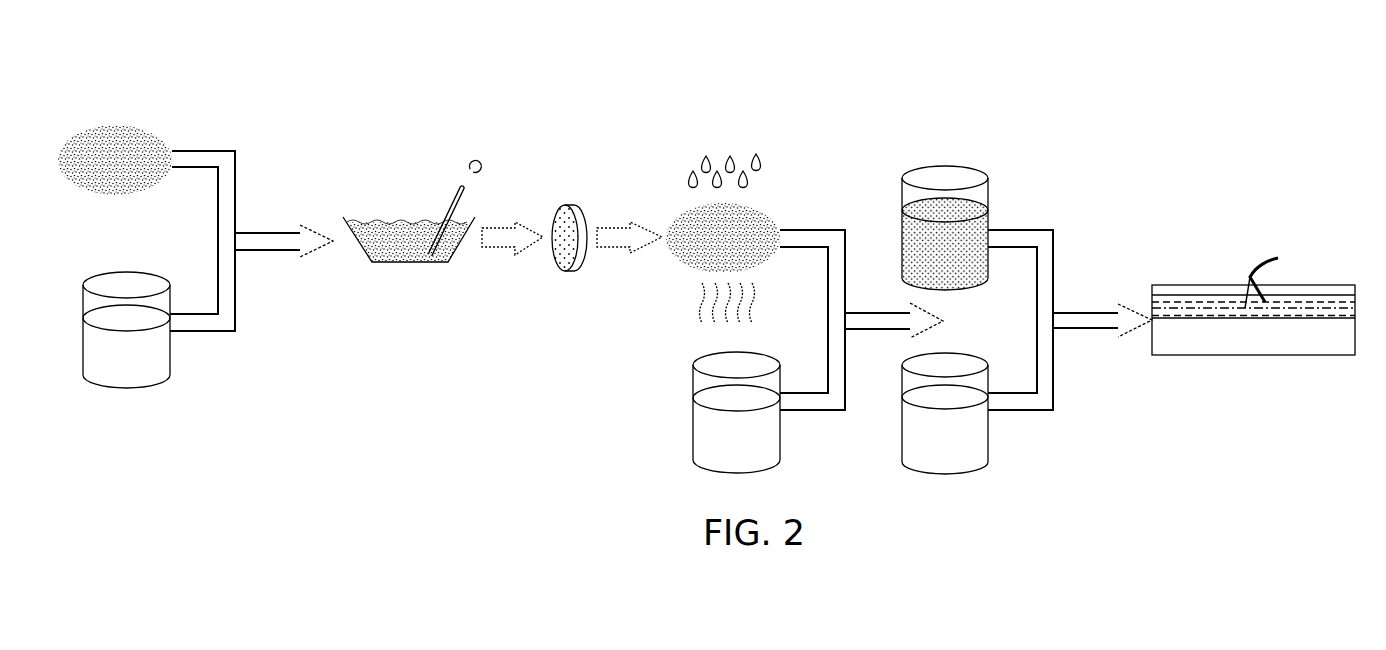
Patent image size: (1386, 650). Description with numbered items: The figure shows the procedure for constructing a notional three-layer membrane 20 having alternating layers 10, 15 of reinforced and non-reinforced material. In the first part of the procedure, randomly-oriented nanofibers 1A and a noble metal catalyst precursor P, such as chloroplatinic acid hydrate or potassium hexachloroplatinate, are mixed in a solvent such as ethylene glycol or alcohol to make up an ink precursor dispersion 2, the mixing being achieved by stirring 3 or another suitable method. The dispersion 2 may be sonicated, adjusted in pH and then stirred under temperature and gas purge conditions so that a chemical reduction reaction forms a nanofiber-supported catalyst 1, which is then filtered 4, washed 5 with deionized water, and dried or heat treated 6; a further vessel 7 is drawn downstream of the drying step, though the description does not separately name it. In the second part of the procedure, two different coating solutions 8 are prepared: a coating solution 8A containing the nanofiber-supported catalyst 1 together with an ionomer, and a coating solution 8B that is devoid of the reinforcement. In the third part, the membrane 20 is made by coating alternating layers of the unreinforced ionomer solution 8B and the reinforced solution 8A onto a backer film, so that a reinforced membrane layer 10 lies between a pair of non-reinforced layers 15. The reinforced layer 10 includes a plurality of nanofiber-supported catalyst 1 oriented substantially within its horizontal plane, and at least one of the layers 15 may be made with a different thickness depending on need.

The carbon nanofiber 1A is at (124, 113).
The noble metal catalyst precursor P is at (168, 359).
The ink precursor dispersion 2 is at (409, 196).
The stirring 3 is at (475, 168).
The filtering 4 is at (569, 206).
The washing 5 is at (765, 156).
The drying or heat treating 6 is at (687, 320).
The container 7 is at (700, 452).
The coating solutions 8 is at (926, 178).
The coating solution containing nanofiber-supported catalyst 8A is at (905, 253).
The coating solution devoid of reinforcement 8B is at (912, 441).
The membrane 20 is at (1232, 263).
The nanofiber-supported catalyst 1 is at (1273, 271).
The reinforced membrane layer 10 is at (1228, 310).
The non-reinforced membrane layer 15 is at (1150, 294).